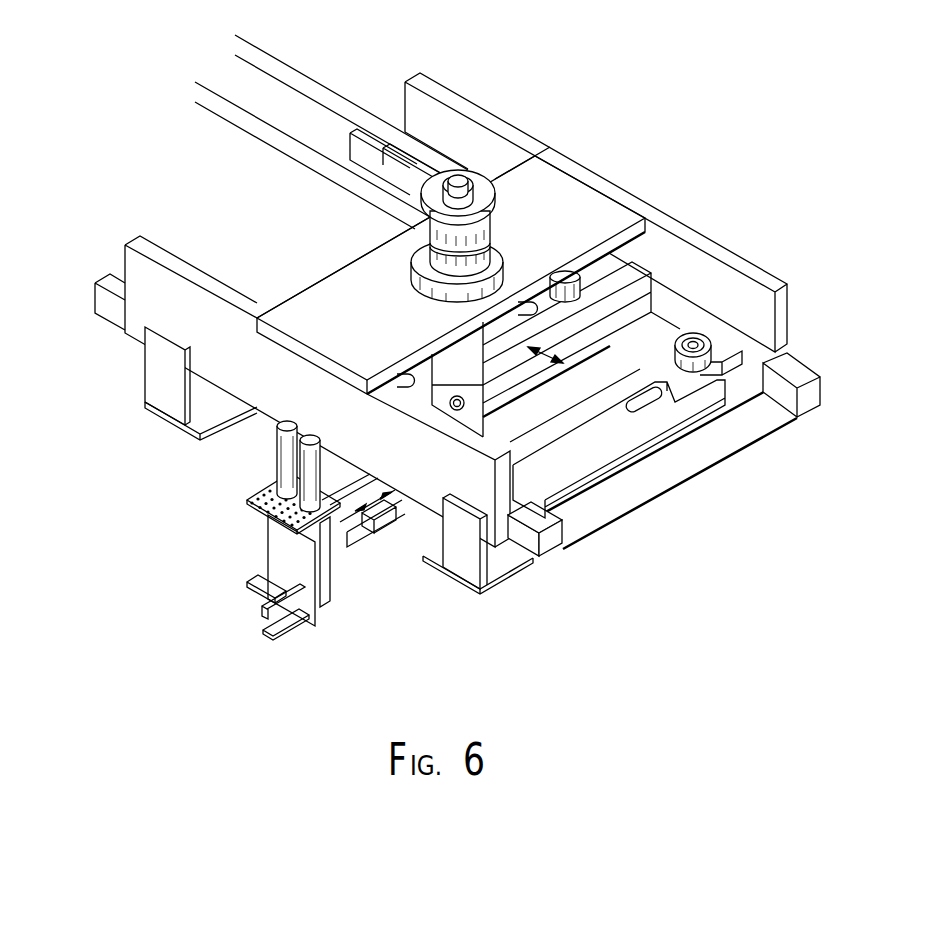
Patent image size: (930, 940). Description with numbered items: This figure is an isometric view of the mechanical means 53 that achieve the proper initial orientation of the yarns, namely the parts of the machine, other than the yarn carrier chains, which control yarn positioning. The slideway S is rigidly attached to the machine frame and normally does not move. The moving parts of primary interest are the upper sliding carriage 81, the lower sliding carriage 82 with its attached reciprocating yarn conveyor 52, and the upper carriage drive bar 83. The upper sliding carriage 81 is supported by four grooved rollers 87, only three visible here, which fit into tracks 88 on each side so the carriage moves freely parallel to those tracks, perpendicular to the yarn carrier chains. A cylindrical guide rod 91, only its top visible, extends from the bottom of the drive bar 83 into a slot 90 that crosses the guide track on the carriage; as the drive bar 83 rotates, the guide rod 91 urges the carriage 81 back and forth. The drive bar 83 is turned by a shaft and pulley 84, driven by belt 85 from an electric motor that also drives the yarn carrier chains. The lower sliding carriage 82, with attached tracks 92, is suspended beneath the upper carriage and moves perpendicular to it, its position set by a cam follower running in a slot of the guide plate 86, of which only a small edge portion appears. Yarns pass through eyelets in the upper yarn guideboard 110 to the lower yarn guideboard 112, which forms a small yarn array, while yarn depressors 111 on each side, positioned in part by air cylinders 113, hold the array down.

The belt 85 is at (305, 83).
The shaft and pulley 84 is at (463, 182).
The mechanical means for achieving the proper initial orientation of the yarns 53 is at (612, 118).
The slideway S is at (729, 242).
The slot 90 is at (598, 333).
The tracks 88 is at (728, 350).
The grooved rollers 87 is at (697, 365).
The guide plate 86 is at (648, 417).
The upper sliding carriage 81 is at (600, 423).
The upper carriage drive bar 83 is at (455, 368).
The cylindrical guide rod 91 is at (435, 375).
The tracks 92 is at (388, 512).
The lower sliding carriage 82 is at (347, 533).
The reciprocating yarn conveyor 52 is at (257, 529).
The upper yarn guideboard 110 is at (272, 505).
The air cylinders 113 is at (310, 483).
The lower yarn guideboard 112 is at (267, 597).
The yarn depressors 111 is at (267, 633).